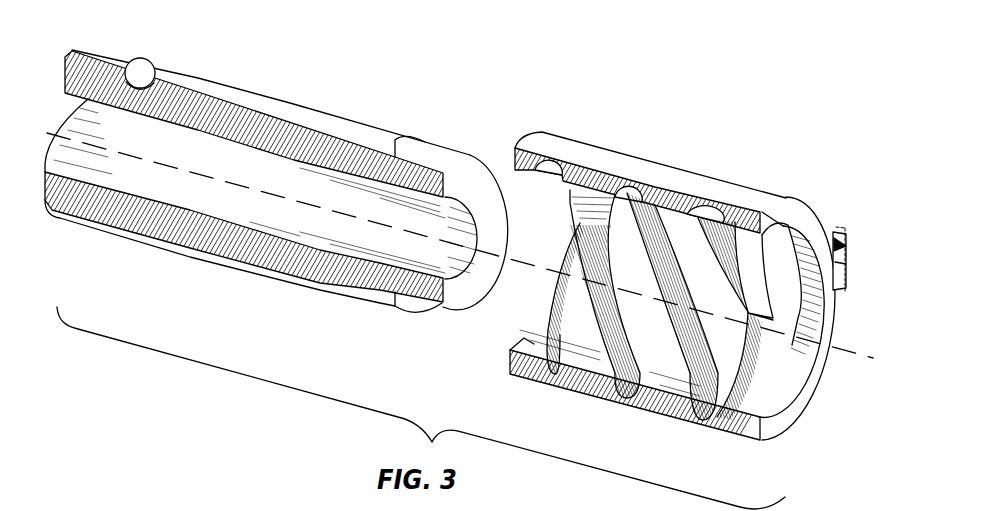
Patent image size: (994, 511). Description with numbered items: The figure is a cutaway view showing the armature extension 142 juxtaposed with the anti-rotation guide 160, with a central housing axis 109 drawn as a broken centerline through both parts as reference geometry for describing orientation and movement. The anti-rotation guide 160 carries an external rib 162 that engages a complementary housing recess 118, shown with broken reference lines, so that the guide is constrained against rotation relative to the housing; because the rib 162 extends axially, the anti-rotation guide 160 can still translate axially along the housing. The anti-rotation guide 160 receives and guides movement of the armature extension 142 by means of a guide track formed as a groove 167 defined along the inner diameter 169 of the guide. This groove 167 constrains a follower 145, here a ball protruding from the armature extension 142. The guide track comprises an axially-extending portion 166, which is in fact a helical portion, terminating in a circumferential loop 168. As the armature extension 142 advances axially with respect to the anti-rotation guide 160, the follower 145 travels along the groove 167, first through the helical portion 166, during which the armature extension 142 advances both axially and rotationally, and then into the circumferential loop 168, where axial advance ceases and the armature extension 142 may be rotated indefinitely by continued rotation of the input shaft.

The central housing axis 109 is at (868, 354).
The housing recess 118 is at (838, 228).
The armature extension 142 is at (317, 117).
The follower 145 is at (145, 58).
The anti-rotation guide 160 is at (462, 147).
The external rib 162 is at (838, 263).
The axially-extending portion 166 is at (580, 236).
The groove 167 is at (617, 350).
The circumferential loop 168 is at (747, 363).
The inner diameter 169 is at (667, 365).